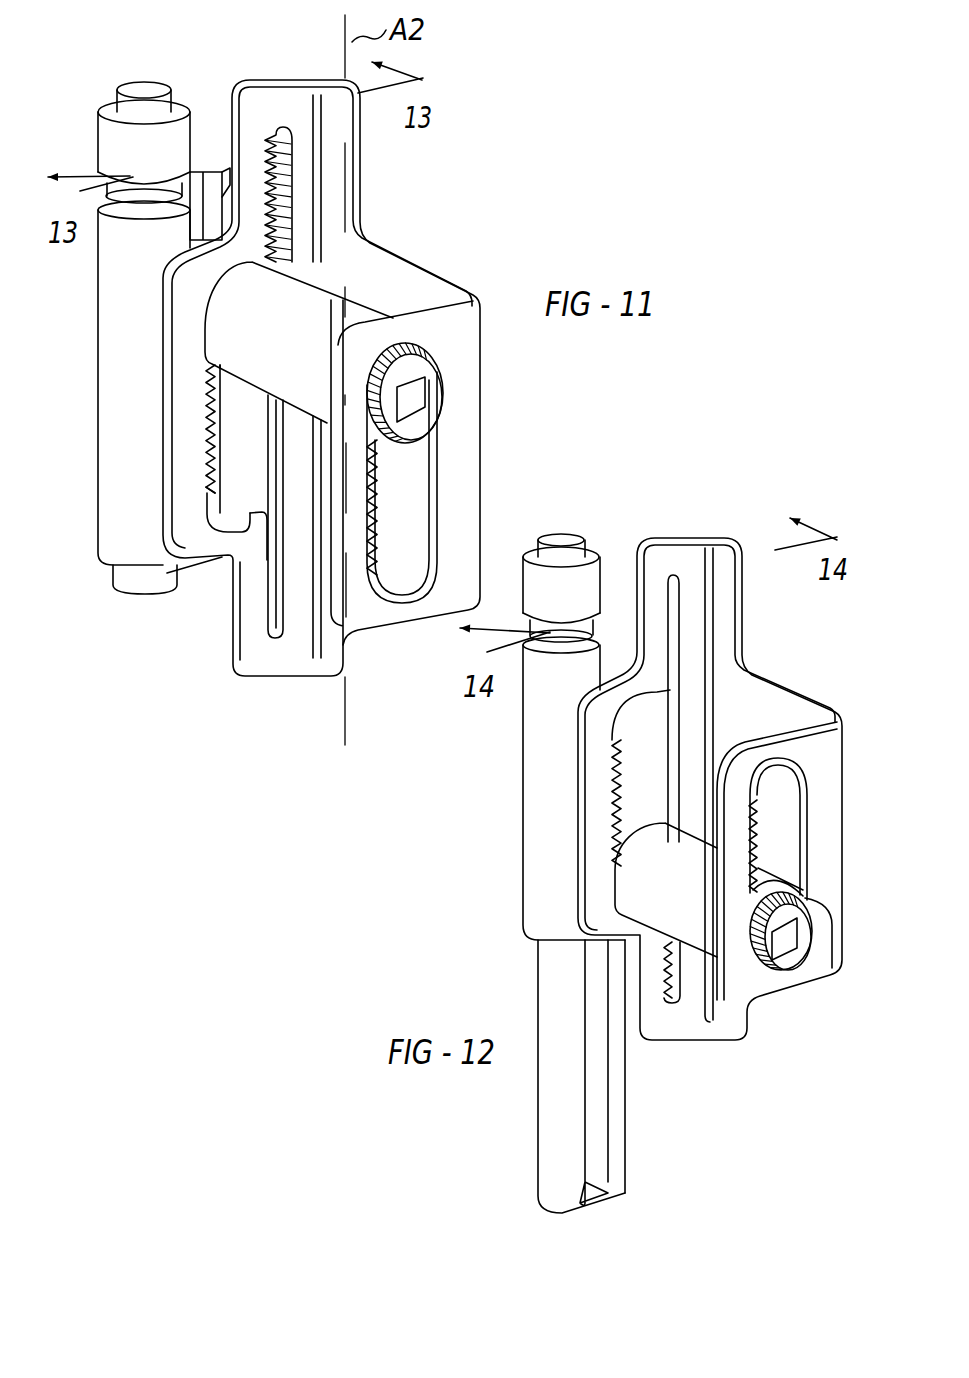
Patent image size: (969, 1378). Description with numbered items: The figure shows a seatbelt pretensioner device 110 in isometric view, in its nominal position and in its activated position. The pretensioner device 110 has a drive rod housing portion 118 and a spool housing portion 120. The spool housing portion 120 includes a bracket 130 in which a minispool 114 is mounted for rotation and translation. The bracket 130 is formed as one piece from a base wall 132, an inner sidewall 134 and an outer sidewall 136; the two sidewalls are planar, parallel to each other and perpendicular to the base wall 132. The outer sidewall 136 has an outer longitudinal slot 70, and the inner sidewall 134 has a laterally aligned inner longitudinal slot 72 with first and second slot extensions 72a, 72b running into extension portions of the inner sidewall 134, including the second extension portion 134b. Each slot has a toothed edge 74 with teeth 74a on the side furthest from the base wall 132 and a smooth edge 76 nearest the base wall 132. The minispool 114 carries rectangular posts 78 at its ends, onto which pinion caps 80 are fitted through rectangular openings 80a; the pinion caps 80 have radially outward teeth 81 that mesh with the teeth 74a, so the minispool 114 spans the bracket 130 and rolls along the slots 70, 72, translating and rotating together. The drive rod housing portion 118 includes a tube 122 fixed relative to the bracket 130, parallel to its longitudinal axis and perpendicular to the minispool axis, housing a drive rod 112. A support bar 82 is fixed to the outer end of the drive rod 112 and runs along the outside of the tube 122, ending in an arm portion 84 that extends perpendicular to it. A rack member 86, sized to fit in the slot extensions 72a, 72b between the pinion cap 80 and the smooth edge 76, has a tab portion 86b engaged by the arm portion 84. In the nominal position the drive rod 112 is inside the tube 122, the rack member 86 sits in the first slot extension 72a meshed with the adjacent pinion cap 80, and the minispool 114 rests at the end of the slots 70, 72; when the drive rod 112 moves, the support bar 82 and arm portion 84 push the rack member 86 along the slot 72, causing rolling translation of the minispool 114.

In FIG. 11, the outer longitudinal slot 70 is at (410, 513).
In FIG. 11, the inner longitudinal slot 72 is at (227, 547).
In FIG. 12, the first slot extension 72a is at (668, 597).
In FIG. 11, the second slot extension 72b is at (273, 600).
In FIG. 11, the toothed edge 74 is at (207, 430).
In FIG. 12, the toothed edge 74 is at (684, 791).
In FIG. 11, the teeth 74a is at (207, 487).
In FIG. 11, the smooth edge 76 is at (440, 453).
In FIG. 11, the rectangular post 78 is at (413, 403).
In FIG. 12, the rectangular post 78 is at (784, 939).
In FIG. 11, the pinion cap 80 is at (430, 377).
In FIG. 12, the pinion cap 80 is at (780, 960).
In FIG. 11, the rectangular opening 80a is at (440, 360).
In FIG. 12, the teeth 81 is at (827, 960).
In FIG. 12, the support bar 82 is at (622, 1102).
In FIG. 11, the arm portion 84 is at (203, 185).
In FIG. 11, the rack member 86 is at (292, 175).
In FIG. 12, the rack member 86 is at (683, 977).
In FIG. 11, the tab portion 86b is at (228, 185).
In FIG. 11, the pretensioner device 110 is at (473, 202).
In FIG. 12, the pretensioner device 110 is at (488, 803).
In FIG. 12, the drive rod 112 is at (537, 1103).
In FIG. 11, the minispool 114 is at (330, 308).
In FIG. 12, the minispool 114 is at (700, 920).
In FIG. 11, the drive rod housing portion 118 is at (85, 345).
In FIG. 12, the drive rod housing portion 118 is at (493, 852).
In FIG. 11, the spool housing portion 120 is at (502, 272).
In FIG. 12, the spool housing portion 120 is at (829, 700).
In FIG. 11, the tube 122 is at (97, 282).
In FIG. 12, the tube 122 is at (523, 738).
In FIG. 12, the bracket 130 is at (764, 678).
In FIG. 11, the base wall 132 is at (413, 290).
In FIG. 11, the inner sidewall 134 is at (280, 103).
In FIG. 11, the second extension portion 134b is at (260, 665).
In FIG. 11, the outer sidewall 136 is at (460, 487).
In FIG. 12, the outer sidewall 136 is at (778, 829).